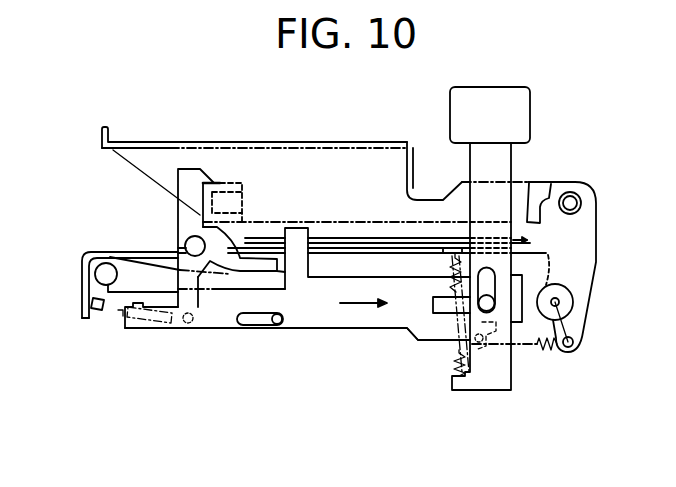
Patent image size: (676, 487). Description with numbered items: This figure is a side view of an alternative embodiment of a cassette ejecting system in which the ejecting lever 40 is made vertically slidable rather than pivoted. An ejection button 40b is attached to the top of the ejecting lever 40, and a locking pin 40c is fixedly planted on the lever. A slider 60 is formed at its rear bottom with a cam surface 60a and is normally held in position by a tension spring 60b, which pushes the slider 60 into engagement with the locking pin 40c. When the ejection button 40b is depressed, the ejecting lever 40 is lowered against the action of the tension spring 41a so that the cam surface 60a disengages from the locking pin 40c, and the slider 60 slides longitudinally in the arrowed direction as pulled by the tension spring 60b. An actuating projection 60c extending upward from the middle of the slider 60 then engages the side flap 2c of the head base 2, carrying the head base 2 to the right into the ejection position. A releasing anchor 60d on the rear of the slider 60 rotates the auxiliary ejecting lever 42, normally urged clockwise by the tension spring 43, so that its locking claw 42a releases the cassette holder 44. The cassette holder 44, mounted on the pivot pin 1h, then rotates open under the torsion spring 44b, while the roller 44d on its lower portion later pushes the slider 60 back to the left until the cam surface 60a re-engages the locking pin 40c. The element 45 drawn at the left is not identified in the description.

The cassette holder 44 is at (157, 142).
The locking claw 42a is at (208, 183).
The head base 2 is at (268, 238).
The side flap 2c is at (322, 241).
The ejection button 40b is at (531, 108).
The torsion spring 44b is at (545, 210).
The pivot pin 1h is at (532, 243).
The roller 44d is at (560, 302).
The tension spring 60b is at (553, 350).
The ejecting lever 40 is at (511, 372).
The locking pin 40c is at (489, 358).
The tension spring 41a is at (452, 368).
The slider 60 is at (343, 322).
The cam surface 60a is at (432, 340).
The actuating projection 60c is at (297, 267).
The releasing anchor 60d is at (137, 300).
The lever 45 is at (97, 290).
The tension spring 43 is at (118, 308).
The auxiliary ejecting lever 42 is at (193, 298).